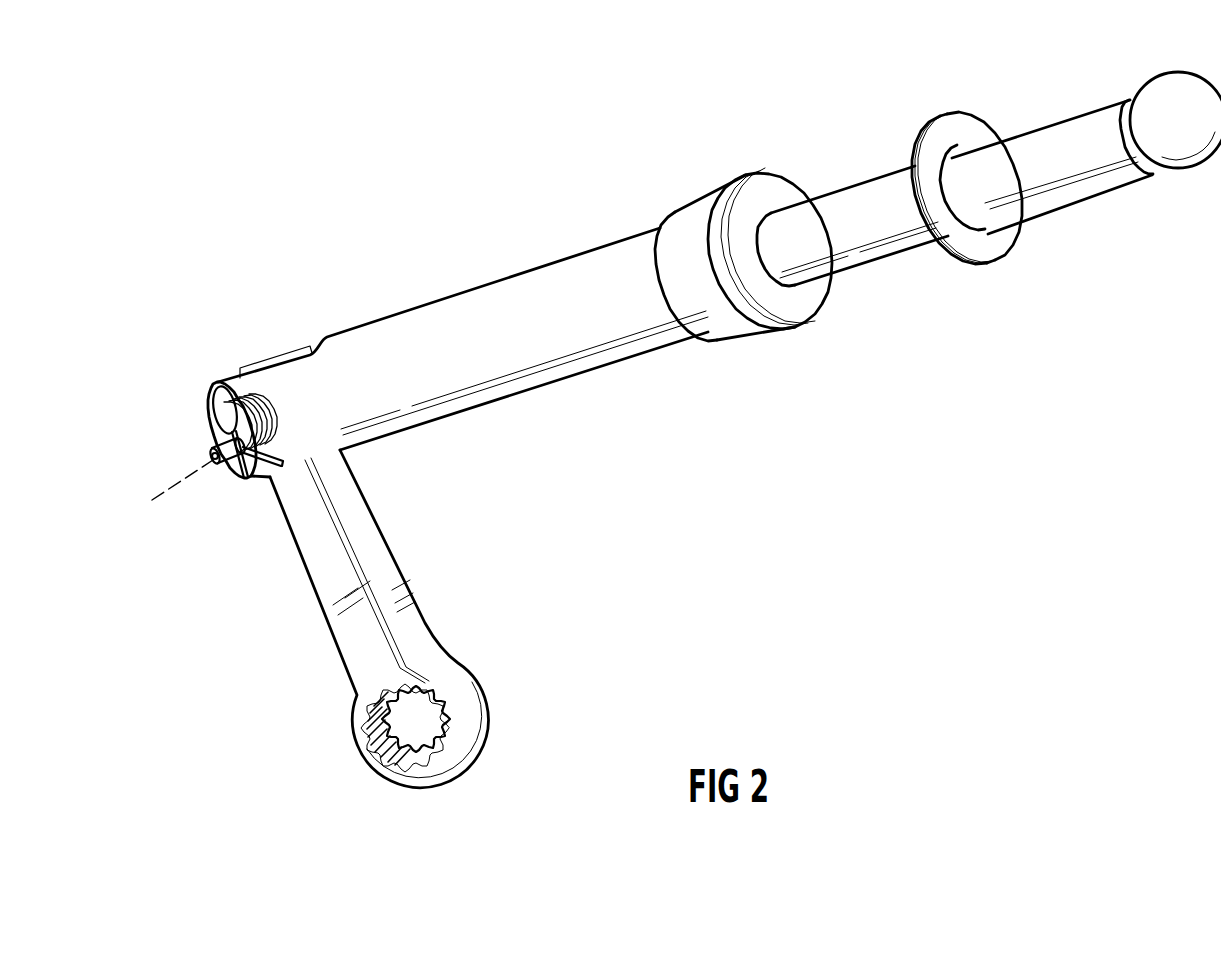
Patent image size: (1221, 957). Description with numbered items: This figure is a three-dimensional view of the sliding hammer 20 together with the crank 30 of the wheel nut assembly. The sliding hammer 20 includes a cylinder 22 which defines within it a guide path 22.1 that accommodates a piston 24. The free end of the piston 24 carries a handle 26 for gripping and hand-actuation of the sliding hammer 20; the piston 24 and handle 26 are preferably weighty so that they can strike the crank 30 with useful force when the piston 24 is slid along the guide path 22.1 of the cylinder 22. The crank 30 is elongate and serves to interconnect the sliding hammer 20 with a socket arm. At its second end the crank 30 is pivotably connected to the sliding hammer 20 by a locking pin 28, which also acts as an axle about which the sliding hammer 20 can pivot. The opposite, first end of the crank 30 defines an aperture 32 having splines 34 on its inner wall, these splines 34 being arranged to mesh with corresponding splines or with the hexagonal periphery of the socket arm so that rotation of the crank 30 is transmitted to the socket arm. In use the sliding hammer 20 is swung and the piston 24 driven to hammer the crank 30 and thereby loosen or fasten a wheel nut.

The sliding hammer 20 is at (633, 134).
The cylinder 22 is at (520, 288).
The guide path 22.1 is at (782, 198).
The piston 24 is at (877, 178).
The handle 26 is at (1059, 134).
The locking pin 28 is at (213, 455).
The crank 30 is at (315, 537).
The aperture 32 is at (440, 692).
The splines 34 is at (378, 745).